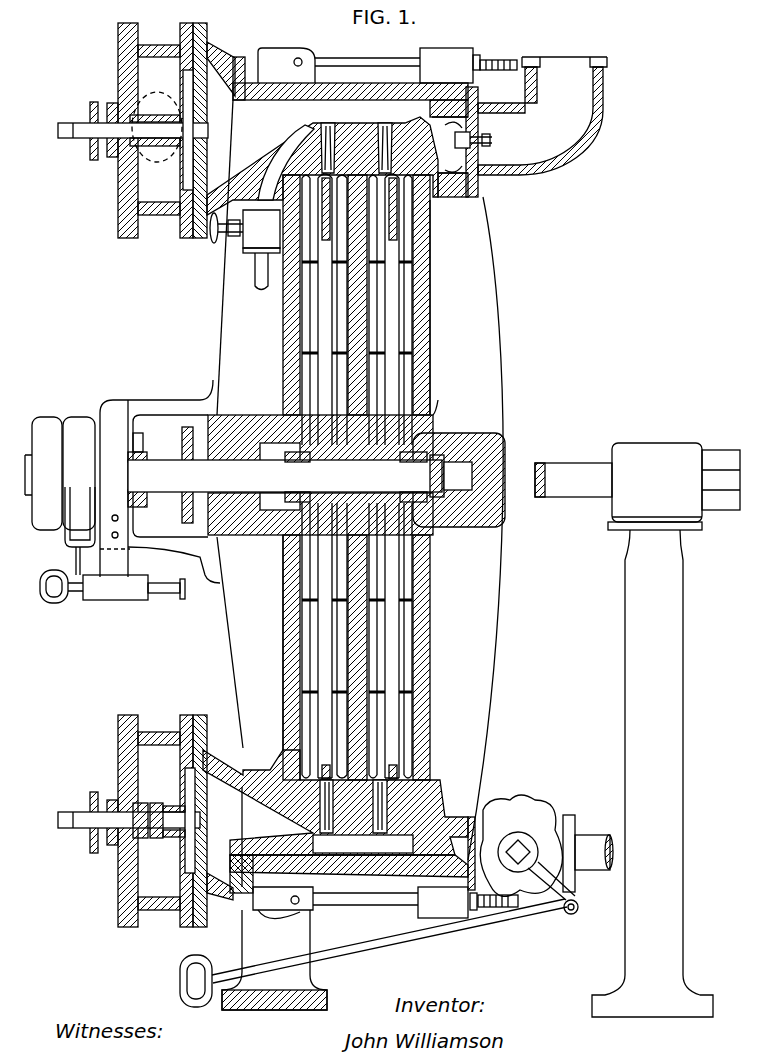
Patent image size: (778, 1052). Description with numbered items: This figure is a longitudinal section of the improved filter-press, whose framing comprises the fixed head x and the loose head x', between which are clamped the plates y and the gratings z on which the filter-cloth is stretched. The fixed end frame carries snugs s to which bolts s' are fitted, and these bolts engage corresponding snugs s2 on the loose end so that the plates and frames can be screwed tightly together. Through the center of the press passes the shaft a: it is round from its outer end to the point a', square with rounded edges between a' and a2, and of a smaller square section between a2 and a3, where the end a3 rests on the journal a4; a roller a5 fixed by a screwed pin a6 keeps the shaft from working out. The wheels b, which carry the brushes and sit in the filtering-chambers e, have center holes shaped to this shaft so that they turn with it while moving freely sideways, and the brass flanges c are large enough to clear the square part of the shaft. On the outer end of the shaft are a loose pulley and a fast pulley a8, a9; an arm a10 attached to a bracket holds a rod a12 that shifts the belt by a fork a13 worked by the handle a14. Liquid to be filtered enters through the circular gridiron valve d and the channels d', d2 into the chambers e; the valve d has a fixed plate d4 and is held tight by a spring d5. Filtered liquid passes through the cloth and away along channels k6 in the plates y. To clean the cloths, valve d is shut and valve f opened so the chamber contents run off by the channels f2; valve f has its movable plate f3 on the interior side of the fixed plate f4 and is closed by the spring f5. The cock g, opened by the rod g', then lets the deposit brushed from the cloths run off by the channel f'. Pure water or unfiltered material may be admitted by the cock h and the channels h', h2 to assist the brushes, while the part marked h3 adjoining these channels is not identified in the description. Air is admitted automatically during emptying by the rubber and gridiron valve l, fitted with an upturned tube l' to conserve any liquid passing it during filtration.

The snugs s is at (284, 483).
The bolts s' is at (366, 470).
The snugs on loose end frame s2 is at (468, 483).
The inlet valve d is at (216, 130).
The inlet channel d' is at (322, 158).
The inlet channel d2 is at (446, 134).
The fixed plate of valve d d4 is at (195, 106).
The spring d5 is at (184, 68).
The cock h is at (245, 250).
The channel h' is at (285, 160).
The channel h2 is at (335, 148).
The passage h3 is at (402, 212).
The rubber and gridiron valve l is at (478, 132).
The upturned tube l' is at (536, 127).
The fixed head x is at (270, 642).
The loose head x' is at (446, 307).
The filtering-chambers e is at (357, 476).
The gratings z is at (318, 241).
The plates y is at (355, 438).
The wheels b is at (357, 477).
The brass flanges c is at (432, 452).
The shaft a is at (285, 476).
The shaft transition point a' is at (187, 478).
The shaft transition point a2 is at (432, 470).
The shaft end point a3 is at (458, 476).
The journal a4 is at (479, 441).
The roller a5 is at (145, 452).
The screwed pin a6 is at (141, 433).
The pulley a8 is at (79, 473).
The pulley a9 is at (43, 473).
The arm a10 is at (115, 587).
The rod a12 is at (162, 594).
The fork a13 is at (70, 548).
The handle a14 is at (53, 603).
The discharge valve f is at (145, 821).
The channel f' is at (335, 803).
The channels f2 is at (390, 803).
The movable plate of valve f f3 is at (318, 822).
The fixed plate of valve f f4 is at (190, 786).
The spring f5 is at (172, 804).
The channels in filter-plates k6 is at (370, 870).
The cock g is at (546, 850).
The rod g' is at (373, 953).